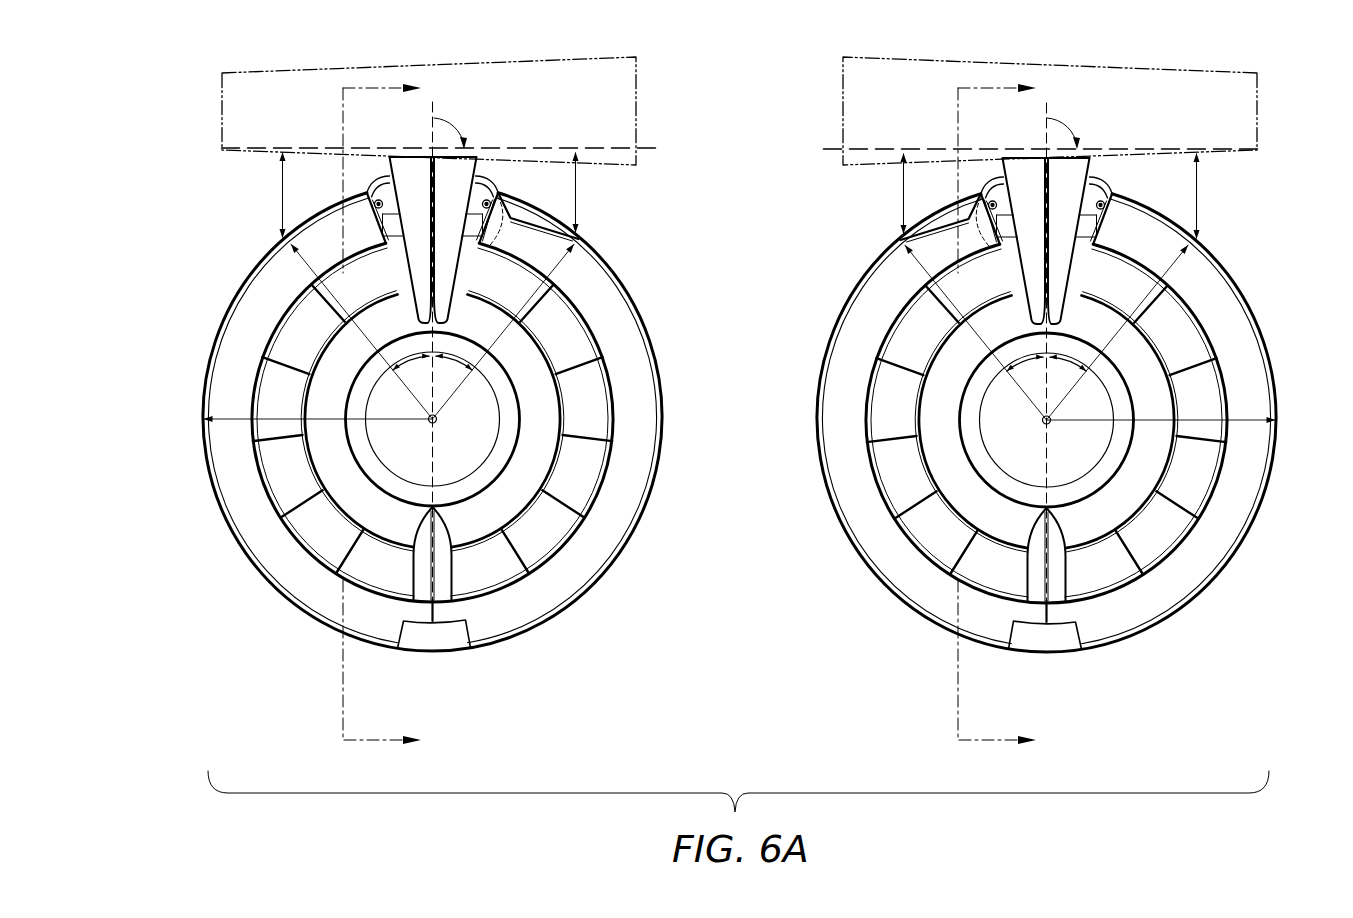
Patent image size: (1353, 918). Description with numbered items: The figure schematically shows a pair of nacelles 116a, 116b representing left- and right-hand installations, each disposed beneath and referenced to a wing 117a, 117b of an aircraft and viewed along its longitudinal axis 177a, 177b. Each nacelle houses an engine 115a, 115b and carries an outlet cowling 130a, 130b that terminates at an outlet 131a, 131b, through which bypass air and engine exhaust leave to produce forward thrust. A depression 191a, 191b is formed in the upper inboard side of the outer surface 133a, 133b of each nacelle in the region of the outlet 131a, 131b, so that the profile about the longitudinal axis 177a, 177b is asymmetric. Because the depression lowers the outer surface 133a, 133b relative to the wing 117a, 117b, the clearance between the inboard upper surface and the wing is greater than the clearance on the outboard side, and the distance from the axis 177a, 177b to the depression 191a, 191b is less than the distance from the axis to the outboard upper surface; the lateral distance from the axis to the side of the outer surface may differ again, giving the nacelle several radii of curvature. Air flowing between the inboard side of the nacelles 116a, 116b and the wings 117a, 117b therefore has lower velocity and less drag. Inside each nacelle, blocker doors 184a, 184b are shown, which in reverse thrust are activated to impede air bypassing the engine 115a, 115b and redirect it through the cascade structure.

The engine 115a is at (383, 456).
The engine 115b is at (1083, 457).
The nacelle 116a is at (666, 272).
The nacelle 116b is at (818, 278).
The wing 117a is at (637, 84).
The wing 117b is at (842, 82).
The outlet cowling 130a is at (233, 500).
The outlet cowling 130b is at (1247, 493).
The outlet 131a is at (333, 530).
The outlet 131b is at (1142, 542).
The outer surface 133a is at (591, 597).
The outer surface 133b is at (900, 610).
The longitudinal axis 177a is at (427, 418).
The longitudinal axis 177b is at (1053, 419).
The blocker door 184a is at (594, 472).
The blocker door 184b is at (883, 458).
The depression 191a is at (527, 213).
The depression 191b is at (938, 218).